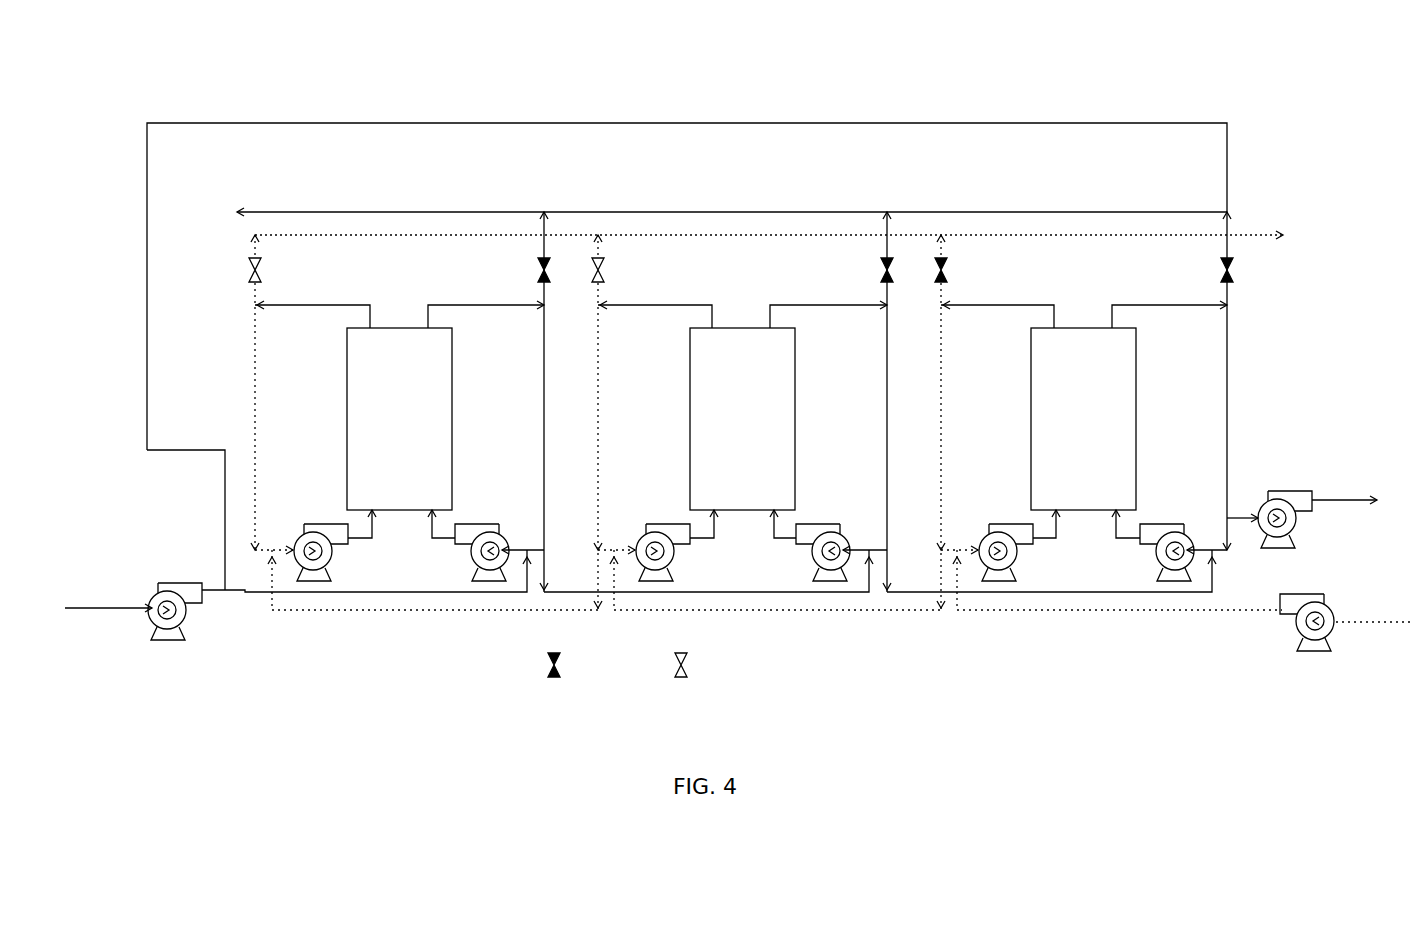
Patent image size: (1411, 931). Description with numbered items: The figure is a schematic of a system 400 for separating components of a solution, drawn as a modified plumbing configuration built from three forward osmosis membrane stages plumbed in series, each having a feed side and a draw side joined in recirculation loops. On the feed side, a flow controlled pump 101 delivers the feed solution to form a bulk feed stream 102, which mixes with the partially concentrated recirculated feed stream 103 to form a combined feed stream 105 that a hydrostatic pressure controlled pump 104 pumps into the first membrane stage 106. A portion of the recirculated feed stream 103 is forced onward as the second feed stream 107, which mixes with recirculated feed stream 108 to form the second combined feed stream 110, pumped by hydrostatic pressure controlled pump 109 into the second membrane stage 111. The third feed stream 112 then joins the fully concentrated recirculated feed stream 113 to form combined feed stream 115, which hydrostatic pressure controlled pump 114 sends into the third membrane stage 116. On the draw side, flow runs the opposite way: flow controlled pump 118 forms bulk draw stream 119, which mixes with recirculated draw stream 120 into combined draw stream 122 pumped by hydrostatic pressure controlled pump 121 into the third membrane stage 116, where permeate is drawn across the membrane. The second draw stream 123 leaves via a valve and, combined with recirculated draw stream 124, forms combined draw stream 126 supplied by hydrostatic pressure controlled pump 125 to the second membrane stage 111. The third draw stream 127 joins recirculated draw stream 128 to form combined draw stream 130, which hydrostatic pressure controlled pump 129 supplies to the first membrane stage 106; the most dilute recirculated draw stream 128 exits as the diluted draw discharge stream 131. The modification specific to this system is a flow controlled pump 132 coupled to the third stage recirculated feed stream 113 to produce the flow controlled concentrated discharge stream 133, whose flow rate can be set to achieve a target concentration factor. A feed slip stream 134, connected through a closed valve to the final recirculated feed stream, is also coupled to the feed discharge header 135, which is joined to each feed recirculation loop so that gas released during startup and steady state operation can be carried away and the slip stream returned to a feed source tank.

The system 400 is at (945, 88).
The flow controlled pump 101 is at (168, 643).
The bulk feed stream 102 is at (428, 595).
The recirculated feed stream 103 is at (547, 460).
The hydrostatic pressure controlled pump 104 is at (488, 524).
The combined feed stream 105 is at (462, 565).
The first membrane stage 106 is at (398, 328).
The second feed stream 107 is at (760, 595).
The recirculated feed stream 108 is at (890, 460).
The hydrostatic pressure controlled pump 109 is at (830, 524).
The second combined feed stream 110 is at (805, 565).
The second membrane stage 111 is at (740, 330).
The third feed stream 112 is at (1112, 596).
The recirculated feed stream 113 is at (1230, 465).
The hydrostatic pressure controlled pump 114 is at (1173, 524).
The combined feed stream 115 is at (1149, 563).
The third membrane stage 116 is at (1078, 330).
The flow controlled pump 118 is at (1310, 653).
The bulk draw stream 119 is at (1057, 610).
The recirculated draw stream 120 is at (945, 490).
The hydrostatic pressure controlled pump 121 is at (998, 524).
The combined draw stream 122 is at (1030, 558).
The second draw stream 123 is at (920, 612).
The recirculated draw stream 124 is at (600, 488).
The hydrostatic pressure controlled pump 125 is at (655, 524).
The combined draw stream 126 is at (687, 560).
The third draw stream 127 is at (368, 608).
The recirculated draw stream 128 is at (258, 488).
The hydrostatic pressure controlled pump 129 is at (313, 524).
The combined draw stream 130 is at (345, 560).
The diluted draw discharge stream 131 is at (442, 235).
The flow controlled pump 132 is at (1294, 490).
The flow controlled concentrated discharge stream 133 is at (1352, 500).
The feed slip stream 134 is at (752, 123).
The feed discharge header 135 is at (1098, 212).